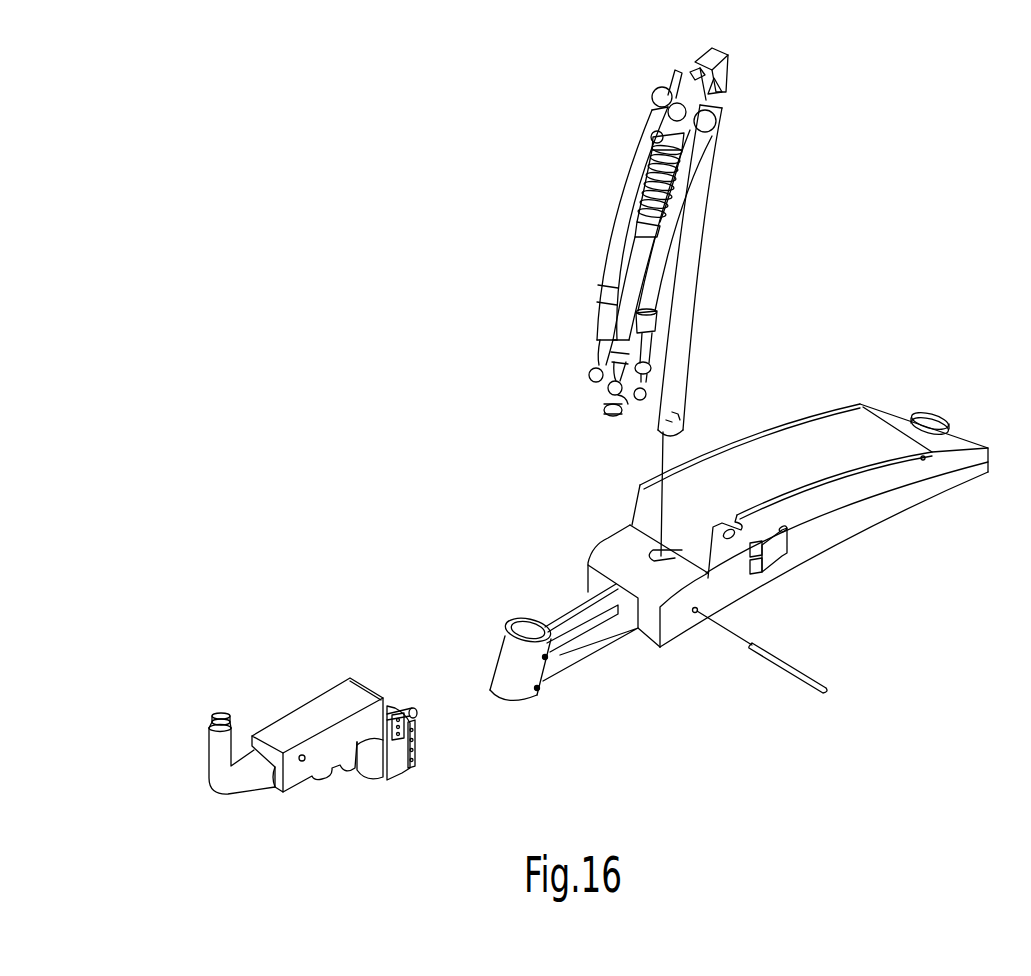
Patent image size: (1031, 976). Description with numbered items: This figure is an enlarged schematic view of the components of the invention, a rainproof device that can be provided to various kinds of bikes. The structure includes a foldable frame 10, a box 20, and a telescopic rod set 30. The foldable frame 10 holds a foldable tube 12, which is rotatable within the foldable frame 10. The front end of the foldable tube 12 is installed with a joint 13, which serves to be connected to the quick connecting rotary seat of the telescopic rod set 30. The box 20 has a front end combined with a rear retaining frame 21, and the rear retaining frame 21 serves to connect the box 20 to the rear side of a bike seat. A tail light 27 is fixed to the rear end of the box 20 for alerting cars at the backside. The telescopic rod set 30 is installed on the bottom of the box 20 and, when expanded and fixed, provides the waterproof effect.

The foldable frame 10 is at (320, 715).
The foldable tube 12 is at (212, 760).
The joint 13 is at (210, 720).
The box 20 is at (887, 473).
The rear retaining frame 21 is at (510, 667).
The tail light 27 is at (935, 421).
The telescopic rod set 30 is at (708, 288).